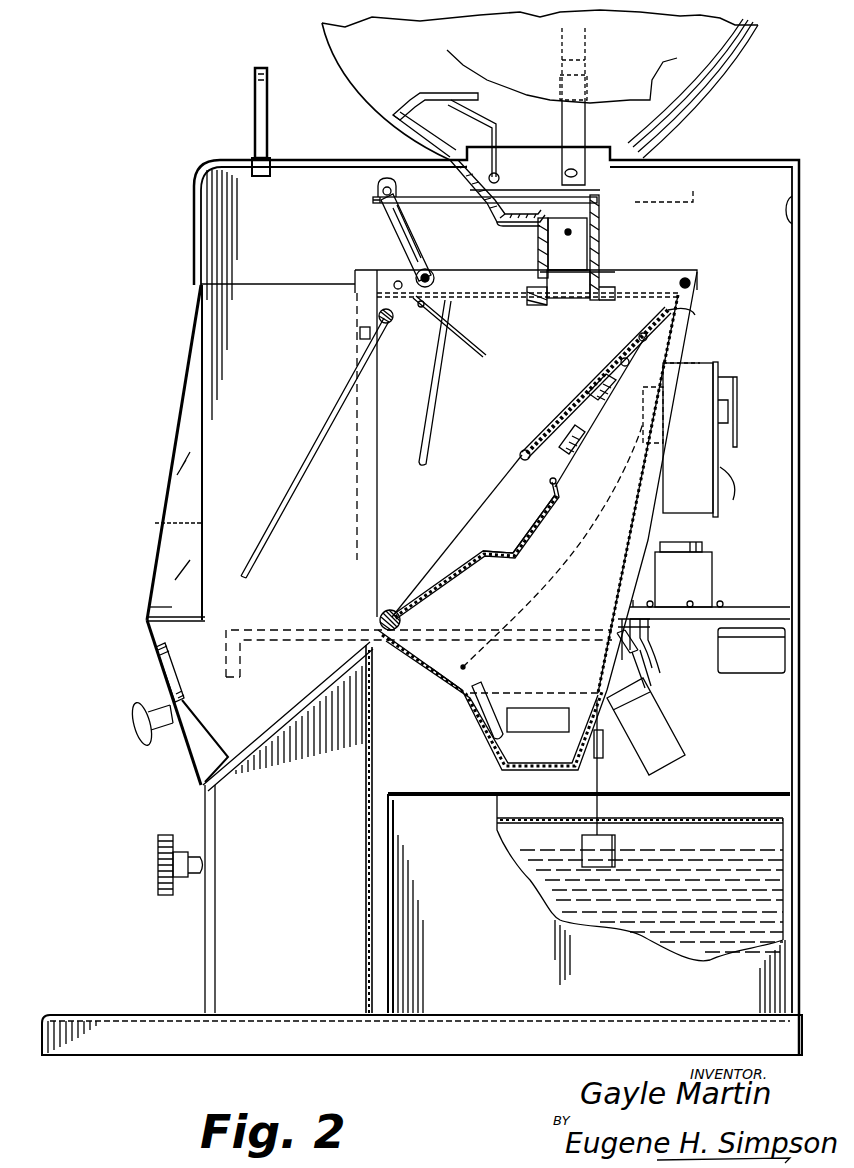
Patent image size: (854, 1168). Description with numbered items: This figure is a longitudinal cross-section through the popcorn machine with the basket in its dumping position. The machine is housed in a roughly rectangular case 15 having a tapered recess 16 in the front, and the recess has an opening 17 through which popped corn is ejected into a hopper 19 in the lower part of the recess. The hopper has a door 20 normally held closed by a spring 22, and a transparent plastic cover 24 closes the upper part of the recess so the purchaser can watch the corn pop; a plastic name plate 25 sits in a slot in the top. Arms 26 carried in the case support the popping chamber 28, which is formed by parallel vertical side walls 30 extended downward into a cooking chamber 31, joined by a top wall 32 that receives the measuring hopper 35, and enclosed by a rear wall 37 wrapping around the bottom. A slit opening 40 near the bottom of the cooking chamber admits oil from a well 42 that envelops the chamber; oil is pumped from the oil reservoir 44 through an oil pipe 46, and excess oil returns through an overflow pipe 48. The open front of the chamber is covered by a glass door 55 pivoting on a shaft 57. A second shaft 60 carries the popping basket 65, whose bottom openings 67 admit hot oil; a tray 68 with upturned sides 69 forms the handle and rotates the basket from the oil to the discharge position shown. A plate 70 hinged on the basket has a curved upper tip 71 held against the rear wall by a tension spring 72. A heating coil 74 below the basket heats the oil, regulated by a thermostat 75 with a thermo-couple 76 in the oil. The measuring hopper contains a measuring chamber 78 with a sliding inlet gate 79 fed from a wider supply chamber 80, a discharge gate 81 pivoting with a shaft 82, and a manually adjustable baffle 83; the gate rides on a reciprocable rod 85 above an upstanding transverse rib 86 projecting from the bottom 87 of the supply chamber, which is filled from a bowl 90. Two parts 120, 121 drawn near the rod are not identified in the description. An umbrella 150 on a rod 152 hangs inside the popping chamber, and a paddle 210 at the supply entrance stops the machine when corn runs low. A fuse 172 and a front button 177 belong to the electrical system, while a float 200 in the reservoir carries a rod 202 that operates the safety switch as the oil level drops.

The case 15 is at (180, 212).
The tapered recess 16 is at (286, 383).
The opening 17 is at (377, 483).
The hopper 19 is at (287, 727).
The door 20 is at (170, 680).
The spring 22 is at (180, 672).
The transparent plastic cover 24 is at (182, 440).
The plastic name plate 25 is at (255, 88).
The arms 26 is at (284, 630).
The popping chamber 28 is at (431, 490).
The side walls 30 is at (380, 533).
The cooking chamber 31 is at (515, 748).
The top wall 32 is at (470, 293).
The measuring hopper 35 is at (636, 182).
The rear wall 37 is at (678, 341).
The slit opening 40 is at (597, 690).
The well 42 is at (478, 722).
The oil reservoir 44 is at (493, 975).
The oil pipe 46 is at (660, 657).
The overflow pipe 48 is at (655, 748).
The glass door 55 is at (292, 480).
The shaft 57 is at (388, 322).
The second shaft 60 is at (402, 620).
The popping basket 65 is at (493, 557).
The openings 67 is at (540, 522).
The tray 68 is at (455, 575).
The upturned sides 69 is at (446, 549).
The plate 70 is at (571, 402).
The curved upper tip 71 is at (662, 312).
The tension spring 72 is at (596, 432).
The heating coil 74 is at (540, 706).
The thermostat 75 is at (700, 470).
The thermo-couple 76 is at (490, 688).
The measuring chamber 78 is at (580, 258).
The sliding inlet gate 79 is at (598, 212).
The supply chamber 80 is at (550, 172).
The discharge gate 81 is at (572, 298).
The shaft 82 is at (528, 284).
The manually adjustable baffle 83 is at (592, 258).
The reciprocable rod 85 is at (446, 198).
The upstanding transverse rib 86 is at (530, 232).
The bottom of supply chamber 87 is at (497, 224).
The bowl 90 is at (362, 88).
The pivot 120 is at (455, 266).
The link 121 is at (410, 243).
The umbrella 150 is at (470, 332).
The rod 152 is at (437, 425).
The fuse 172 is at (685, 566).
The button 177 is at (158, 890).
The float 200 is at (615, 846).
The rod 202 is at (600, 777).
The paddle 210 is at (470, 118).